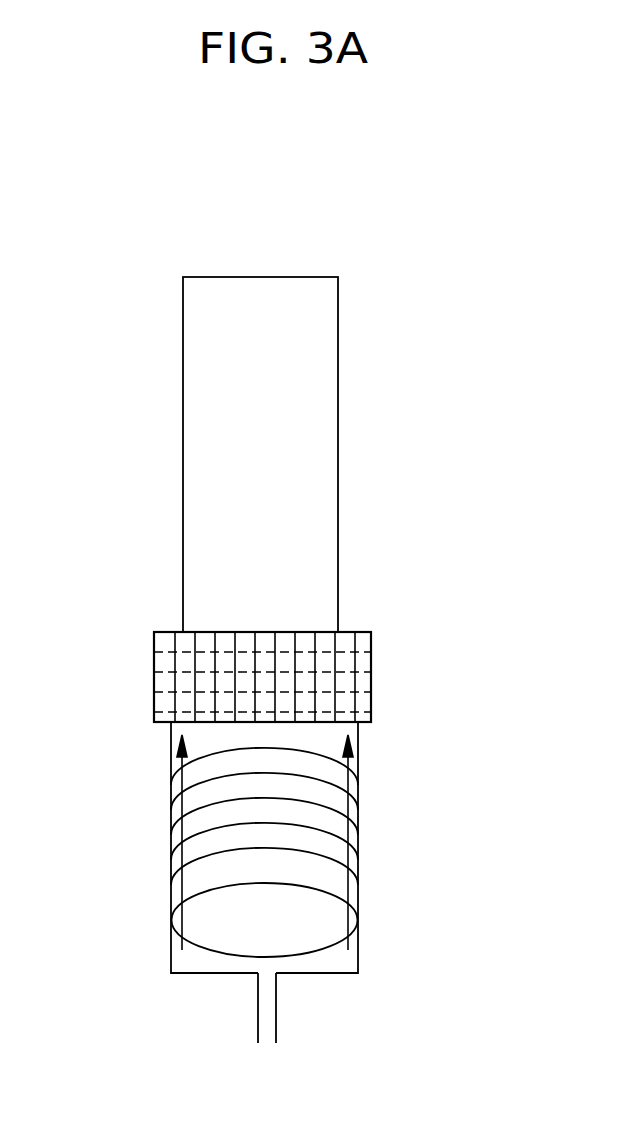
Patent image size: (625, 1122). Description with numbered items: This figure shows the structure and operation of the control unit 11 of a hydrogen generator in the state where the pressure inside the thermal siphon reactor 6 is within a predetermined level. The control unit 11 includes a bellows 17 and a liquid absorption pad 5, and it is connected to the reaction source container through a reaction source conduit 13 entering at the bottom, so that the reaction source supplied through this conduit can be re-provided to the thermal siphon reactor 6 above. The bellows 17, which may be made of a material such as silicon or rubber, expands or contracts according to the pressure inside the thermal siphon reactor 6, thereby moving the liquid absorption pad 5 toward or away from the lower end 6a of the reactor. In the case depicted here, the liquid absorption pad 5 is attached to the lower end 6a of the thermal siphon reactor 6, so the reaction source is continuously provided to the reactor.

The thermal siphon reactor 6 is at (322, 442).
The lower end of the thermal siphon reactor 6a is at (305, 631).
The liquid absorption pad 5 is at (371, 683).
The control unit 11 is at (163, 791).
The bellows 17 is at (317, 922).
The reaction source conduit 13 is at (277, 1007).